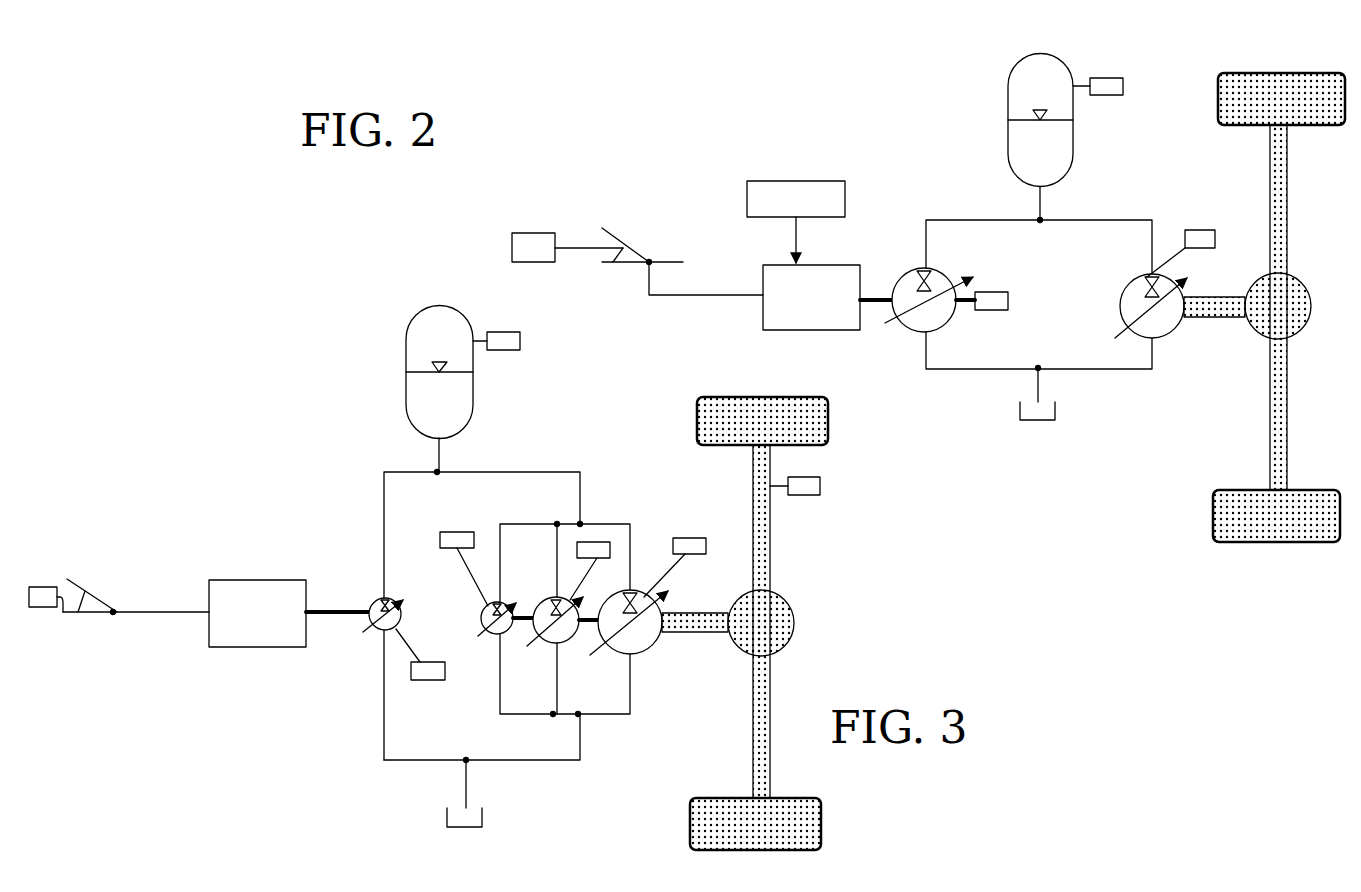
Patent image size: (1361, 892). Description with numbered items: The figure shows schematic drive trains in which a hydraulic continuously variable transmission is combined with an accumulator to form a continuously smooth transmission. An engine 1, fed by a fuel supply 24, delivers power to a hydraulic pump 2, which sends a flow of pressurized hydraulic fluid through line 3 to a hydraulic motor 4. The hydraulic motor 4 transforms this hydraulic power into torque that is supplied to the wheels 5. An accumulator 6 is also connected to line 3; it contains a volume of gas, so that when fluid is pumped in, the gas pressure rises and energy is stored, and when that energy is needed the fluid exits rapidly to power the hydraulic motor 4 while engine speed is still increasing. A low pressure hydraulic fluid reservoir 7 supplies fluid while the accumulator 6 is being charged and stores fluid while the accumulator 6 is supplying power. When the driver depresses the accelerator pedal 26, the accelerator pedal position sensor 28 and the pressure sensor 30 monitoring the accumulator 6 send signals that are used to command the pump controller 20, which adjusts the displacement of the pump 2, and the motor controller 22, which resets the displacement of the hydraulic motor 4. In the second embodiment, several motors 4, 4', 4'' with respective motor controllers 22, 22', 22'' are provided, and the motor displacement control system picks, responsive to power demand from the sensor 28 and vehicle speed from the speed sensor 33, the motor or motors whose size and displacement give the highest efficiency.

In FIG. 2, the engine 1 is at (758, 318).
In FIG. 3, the engine 1 is at (218, 647).
In FIG. 2, the hydraulic pump 2 is at (912, 318).
In FIG. 3, the hydraulic pump 2 is at (374, 632).
In FIG. 2, the line 3 is at (950, 220).
In FIG. 3, the line 3 is at (390, 472).
In FIG. 2, the hydraulic motor 4 is at (1157, 332).
In FIG. 3, the hydraulic motor 4 is at (635, 645).
In FIG. 3, the hydraulic motor 4' is at (562, 646).
In FIG. 3, the hydraulic motor 4'' is at (506, 647).
In FIG. 2, the wheels 5 is at (1250, 523).
In FIG. 3, the wheels 5 is at (805, 826).
In FIG. 2, the accumulator 6 is at (1008, 105).
In FIG. 3, the accumulator 6 is at (406, 340).
In FIG. 2, the low pressure hydraulic fluid reservoir 7 is at (1055, 405).
In FIG. 3, the low pressure hydraulic fluid reservoir 7 is at (446, 822).
In FIG. 2, the pump controller 20 is at (1000, 293).
In FIG. 3, the pump controller 20 is at (420, 680).
In FIG. 2, the motor controller 22 is at (1192, 227).
In FIG. 3, the motor controller 22 is at (683, 543).
In FIG. 3, the motor controller 22' is at (611, 541).
In FIG. 3, the motor controller 22'' is at (456, 543).
In FIG. 2, the fuel supply 24 is at (803, 181).
In FIG. 2, the accelerator pedal 26 is at (626, 238).
In FIG. 3, the accelerator pedal 26 is at (96, 586).
In FIG. 2, the accelerator pedal position sensor 28 is at (536, 248).
In FIG. 3, the accelerator pedal position sensor 28 is at (42, 587).
In FIG. 2, the pressure sensor 30 is at (1105, 95).
In FIG. 3, the pressure sensor 30 is at (500, 344).
In FIG. 3, the speed sensor 33 is at (803, 495).